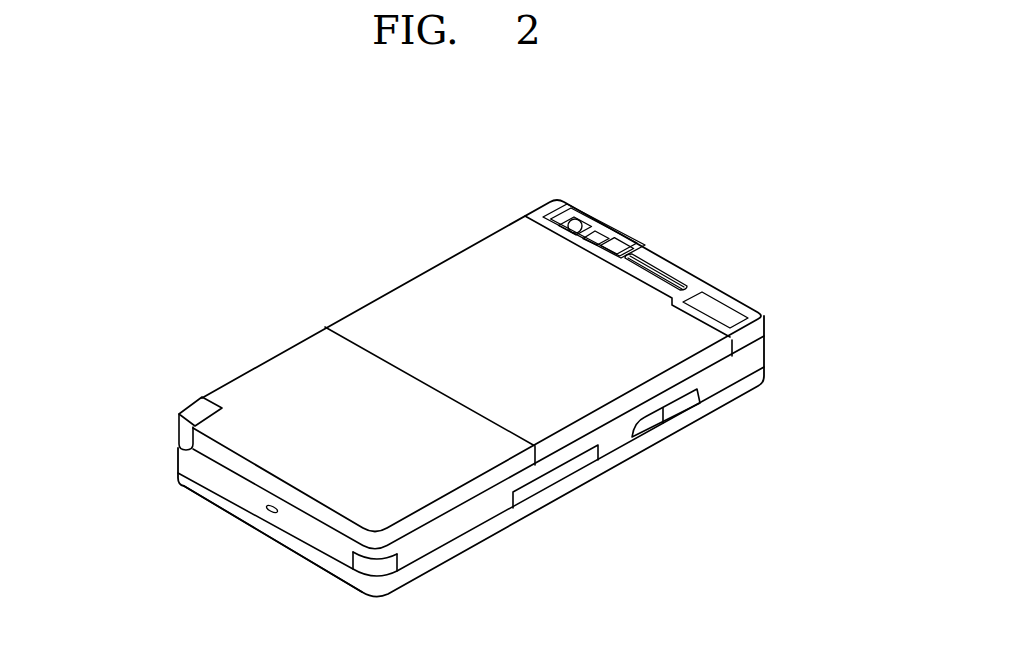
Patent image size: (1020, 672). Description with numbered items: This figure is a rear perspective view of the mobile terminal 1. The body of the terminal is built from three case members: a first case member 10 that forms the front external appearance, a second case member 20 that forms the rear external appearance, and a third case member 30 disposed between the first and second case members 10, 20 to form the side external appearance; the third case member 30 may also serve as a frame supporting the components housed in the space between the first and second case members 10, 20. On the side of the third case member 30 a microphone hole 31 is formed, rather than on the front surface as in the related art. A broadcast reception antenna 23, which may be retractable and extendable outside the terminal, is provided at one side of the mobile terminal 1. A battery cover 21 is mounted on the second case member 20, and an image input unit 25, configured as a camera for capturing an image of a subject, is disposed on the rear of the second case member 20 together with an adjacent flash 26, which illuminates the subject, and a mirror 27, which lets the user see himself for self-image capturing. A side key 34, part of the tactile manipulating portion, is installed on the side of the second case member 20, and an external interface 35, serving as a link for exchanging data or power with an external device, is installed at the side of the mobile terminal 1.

The mobile terminal 1 is at (402, 240).
The first case member 10 is at (235, 507).
The second case member 20 is at (223, 457).
The battery cover 21 is at (514, 256).
The broadcast reception antenna 23 is at (194, 406).
The image input unit 25 is at (575, 224).
The flash 26 is at (596, 235).
The mirror 27 is at (614, 242).
The third case member 30 is at (223, 482).
The microphone hole 31 is at (267, 512).
The side key 34 is at (653, 423).
The external interface 35 is at (562, 475).